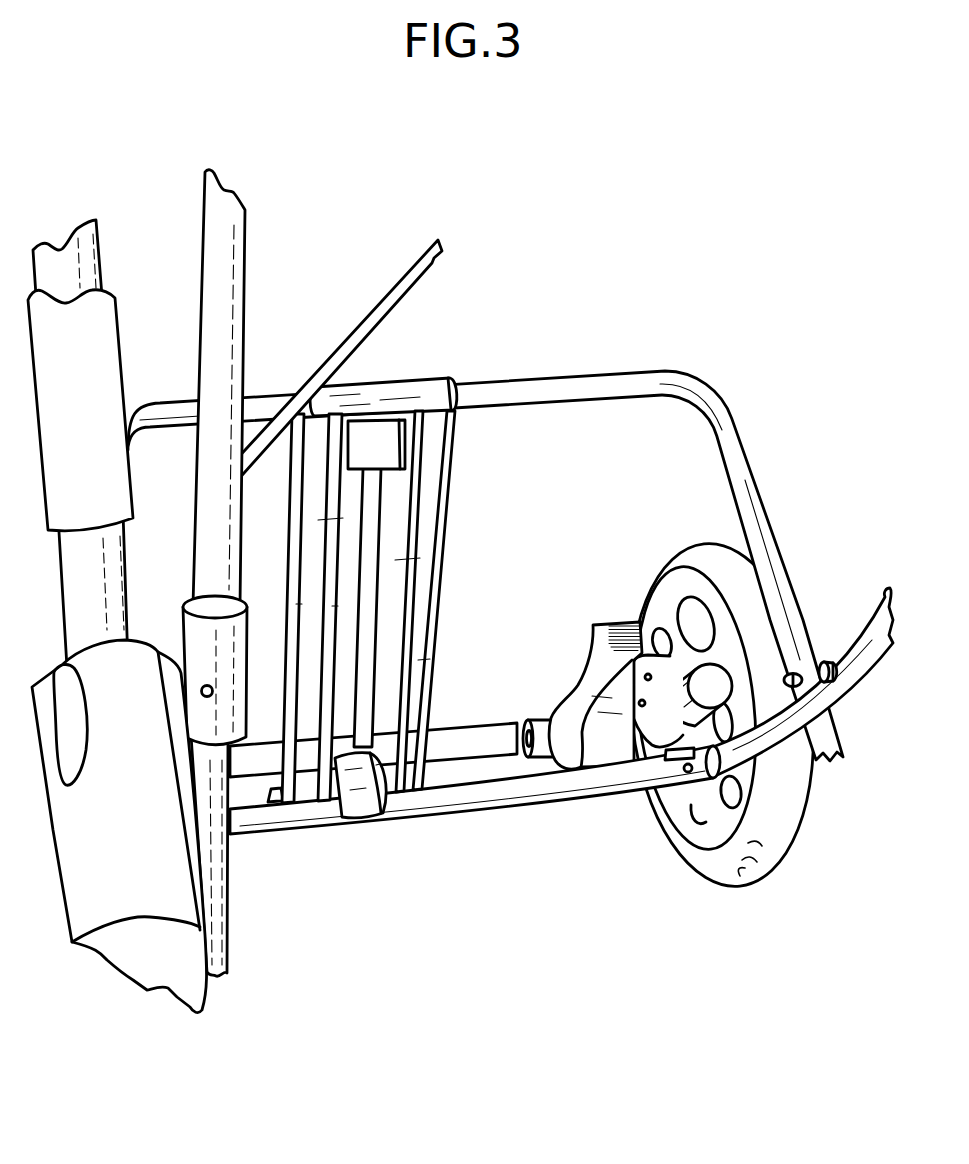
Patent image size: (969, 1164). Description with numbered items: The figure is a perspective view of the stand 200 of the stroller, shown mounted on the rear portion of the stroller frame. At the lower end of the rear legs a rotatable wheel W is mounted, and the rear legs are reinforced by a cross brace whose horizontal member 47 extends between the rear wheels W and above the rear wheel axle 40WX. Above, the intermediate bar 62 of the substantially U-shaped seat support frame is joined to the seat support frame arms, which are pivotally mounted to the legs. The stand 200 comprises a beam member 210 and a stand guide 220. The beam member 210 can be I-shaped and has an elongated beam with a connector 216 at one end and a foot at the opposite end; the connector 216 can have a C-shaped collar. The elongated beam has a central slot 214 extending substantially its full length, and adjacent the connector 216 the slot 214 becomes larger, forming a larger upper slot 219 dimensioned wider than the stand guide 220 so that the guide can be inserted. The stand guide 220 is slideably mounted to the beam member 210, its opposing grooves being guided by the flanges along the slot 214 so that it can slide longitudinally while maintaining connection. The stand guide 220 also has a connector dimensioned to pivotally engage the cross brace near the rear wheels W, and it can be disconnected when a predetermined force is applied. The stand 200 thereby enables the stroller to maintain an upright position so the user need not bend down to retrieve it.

The intermediate bar 62 is at (617, 383).
The horizontal member 47 is at (470, 797).
The rotatable wheel W is at (743, 882).
The rear wheel axle 40WX is at (457, 742).
The stand 200 is at (427, 641).
The beam member 210 is at (447, 643).
The central slot 214 is at (368, 615).
The connector 216 is at (385, 396).
The larger upper slot 219 is at (380, 450).
The stand guide 220 is at (368, 825).